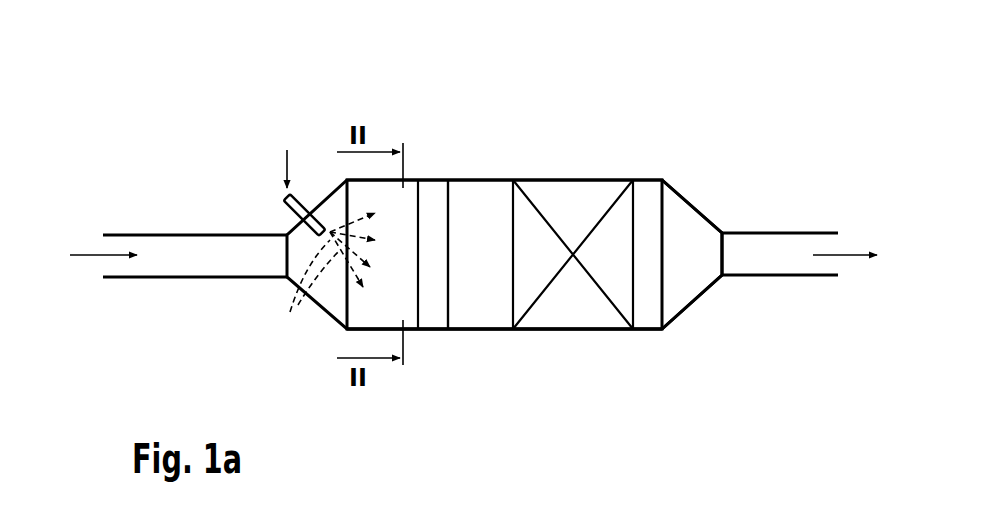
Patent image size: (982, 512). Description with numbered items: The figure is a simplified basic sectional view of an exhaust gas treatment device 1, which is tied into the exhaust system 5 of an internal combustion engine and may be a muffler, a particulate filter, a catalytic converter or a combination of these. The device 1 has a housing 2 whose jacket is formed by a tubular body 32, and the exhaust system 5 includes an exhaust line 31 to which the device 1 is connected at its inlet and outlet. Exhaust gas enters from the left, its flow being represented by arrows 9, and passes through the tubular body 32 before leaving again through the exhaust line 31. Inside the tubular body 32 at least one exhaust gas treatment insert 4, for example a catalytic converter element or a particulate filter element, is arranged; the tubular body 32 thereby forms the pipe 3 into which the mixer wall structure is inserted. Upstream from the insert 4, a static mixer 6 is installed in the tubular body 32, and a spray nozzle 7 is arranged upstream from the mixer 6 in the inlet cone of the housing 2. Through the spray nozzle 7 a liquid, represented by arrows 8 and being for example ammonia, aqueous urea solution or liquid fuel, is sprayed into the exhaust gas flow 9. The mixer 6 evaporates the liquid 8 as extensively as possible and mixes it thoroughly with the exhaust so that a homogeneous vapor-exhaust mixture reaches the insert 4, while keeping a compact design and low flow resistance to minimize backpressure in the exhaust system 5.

The exhaust gas treatment device 1 is at (686, 133).
The housing 2 is at (477, 176).
The pipe 3 is at (433, 178).
The exhaust gas treatment insert 4 is at (575, 202).
The exhaust system 5 is at (781, 228).
The static mixer 6 is at (452, 269).
The spray nozzle 7 is at (303, 197).
The liquid 8 is at (287, 162).
The exhaust gas flow 9 is at (87, 258).
The exhaust line 31 is at (190, 278).
The tubular body 32 is at (470, 331).